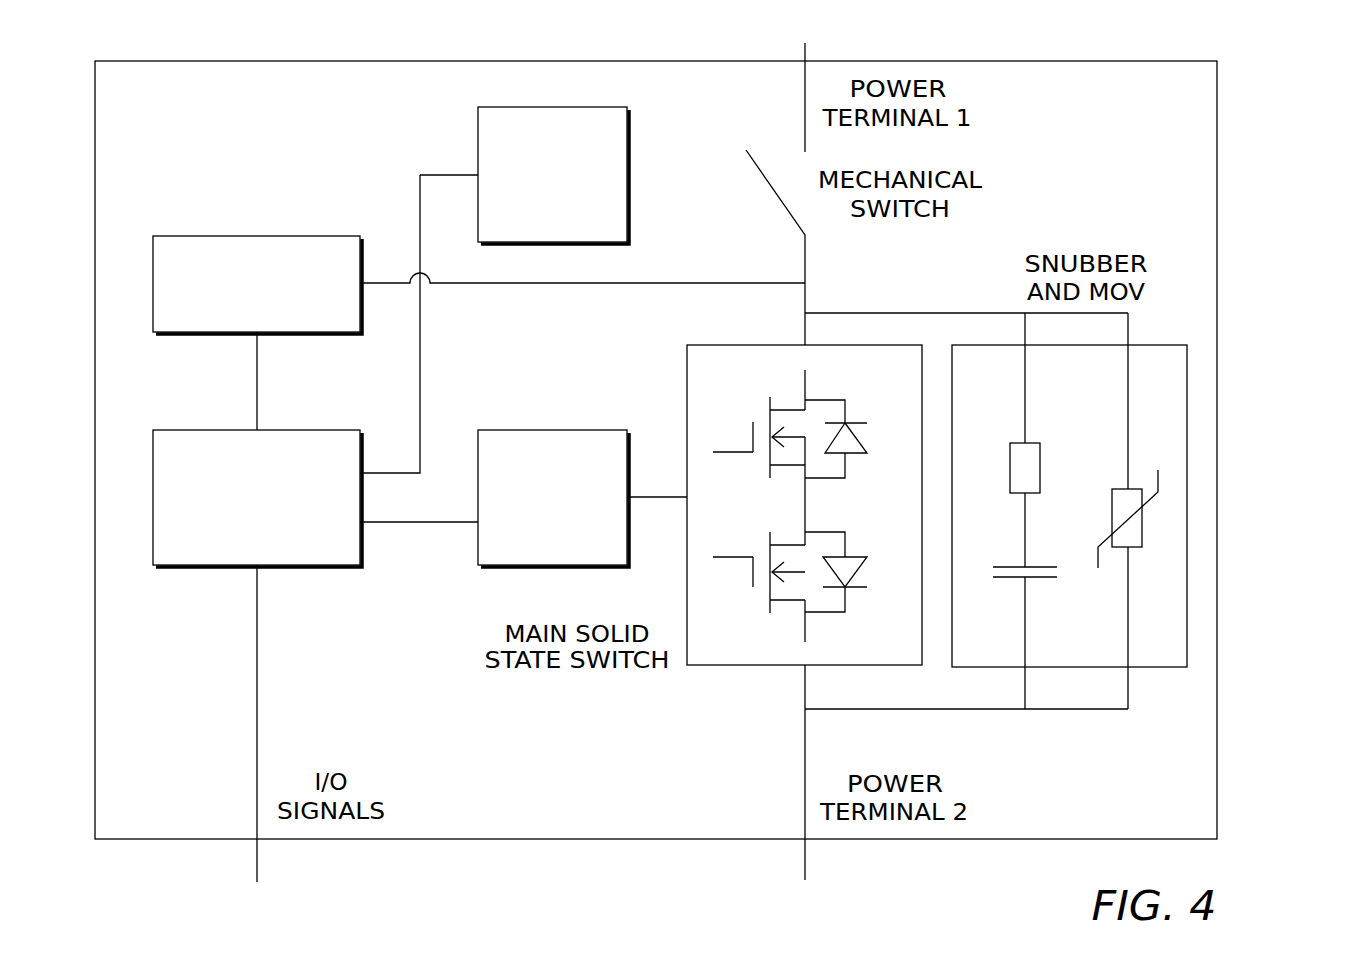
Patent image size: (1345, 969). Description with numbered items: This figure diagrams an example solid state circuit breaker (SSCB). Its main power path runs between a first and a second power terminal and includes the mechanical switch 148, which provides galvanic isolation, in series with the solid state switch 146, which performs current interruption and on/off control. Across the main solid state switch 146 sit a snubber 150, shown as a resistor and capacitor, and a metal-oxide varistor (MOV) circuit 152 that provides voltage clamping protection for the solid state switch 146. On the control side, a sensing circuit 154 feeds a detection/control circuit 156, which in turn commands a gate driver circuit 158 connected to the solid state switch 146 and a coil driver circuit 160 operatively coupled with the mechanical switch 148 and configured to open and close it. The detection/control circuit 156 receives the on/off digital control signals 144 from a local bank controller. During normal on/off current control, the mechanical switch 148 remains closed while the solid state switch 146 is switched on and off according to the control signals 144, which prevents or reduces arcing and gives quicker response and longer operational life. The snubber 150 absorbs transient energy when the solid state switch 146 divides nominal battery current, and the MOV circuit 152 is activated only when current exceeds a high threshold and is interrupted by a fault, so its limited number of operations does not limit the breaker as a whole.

The on/off digital control signals 144 is at (258, 862).
The solid state switch 146 is at (755, 345).
The mechanical switch 148 is at (774, 140).
The snubber 150 is at (1042, 606).
The metal-oxide varistor (MOV) circuit 152 is at (1143, 532).
The sensing circuit 154 is at (223, 237).
The detection/control circuit 156 is at (224, 431).
The gate driver circuit 158 is at (548, 431).
The coil driver circuit 160 is at (548, 108).